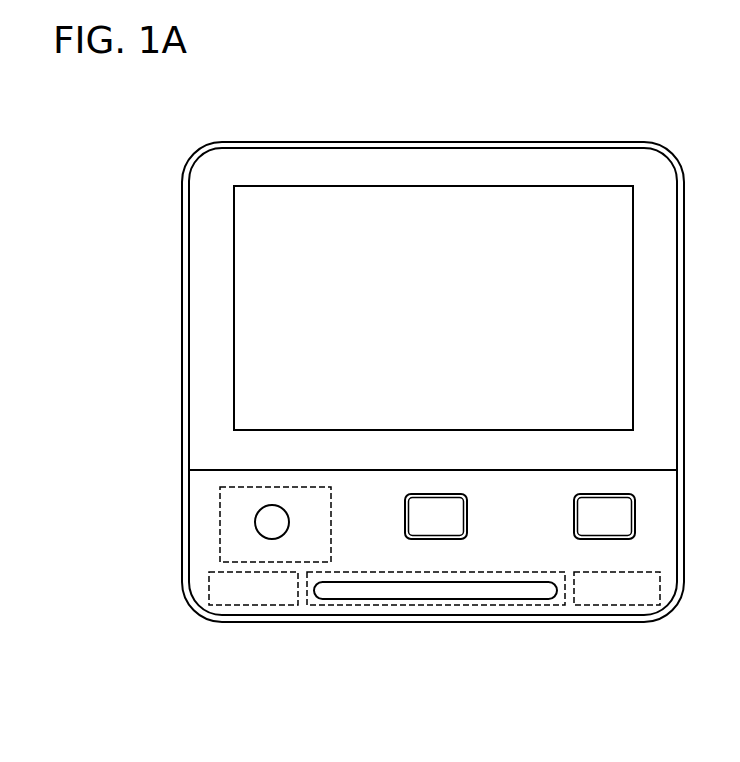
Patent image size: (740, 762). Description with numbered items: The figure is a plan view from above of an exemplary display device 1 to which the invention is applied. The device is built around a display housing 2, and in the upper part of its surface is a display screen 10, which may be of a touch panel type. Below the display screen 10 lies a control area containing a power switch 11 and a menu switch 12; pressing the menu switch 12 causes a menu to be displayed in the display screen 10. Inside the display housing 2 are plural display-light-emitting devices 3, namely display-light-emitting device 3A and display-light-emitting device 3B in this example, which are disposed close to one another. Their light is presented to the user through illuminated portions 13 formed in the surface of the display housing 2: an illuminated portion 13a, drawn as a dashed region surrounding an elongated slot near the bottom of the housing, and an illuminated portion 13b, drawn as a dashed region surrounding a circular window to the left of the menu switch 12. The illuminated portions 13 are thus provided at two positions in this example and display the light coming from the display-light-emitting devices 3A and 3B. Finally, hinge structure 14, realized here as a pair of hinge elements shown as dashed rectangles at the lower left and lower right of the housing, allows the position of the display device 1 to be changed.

The display device 1 is at (175, 584).
The display housing 2 is at (252, 142).
The display-light-emitting devices 3 is at (330, 607).
The display-light-emitting device 3A is at (500, 613).
The display-light-emitting device 3B is at (210, 554).
The display screen 10 is at (500, 203).
The power switch 11 is at (612, 518).
The menu switch 12 is at (418, 522).
The illuminated portions 13 is at (310, 589).
The illuminated portion 13a is at (355, 598).
The illuminated portion 13b is at (255, 522).
The hinge structure 14 is at (283, 605).